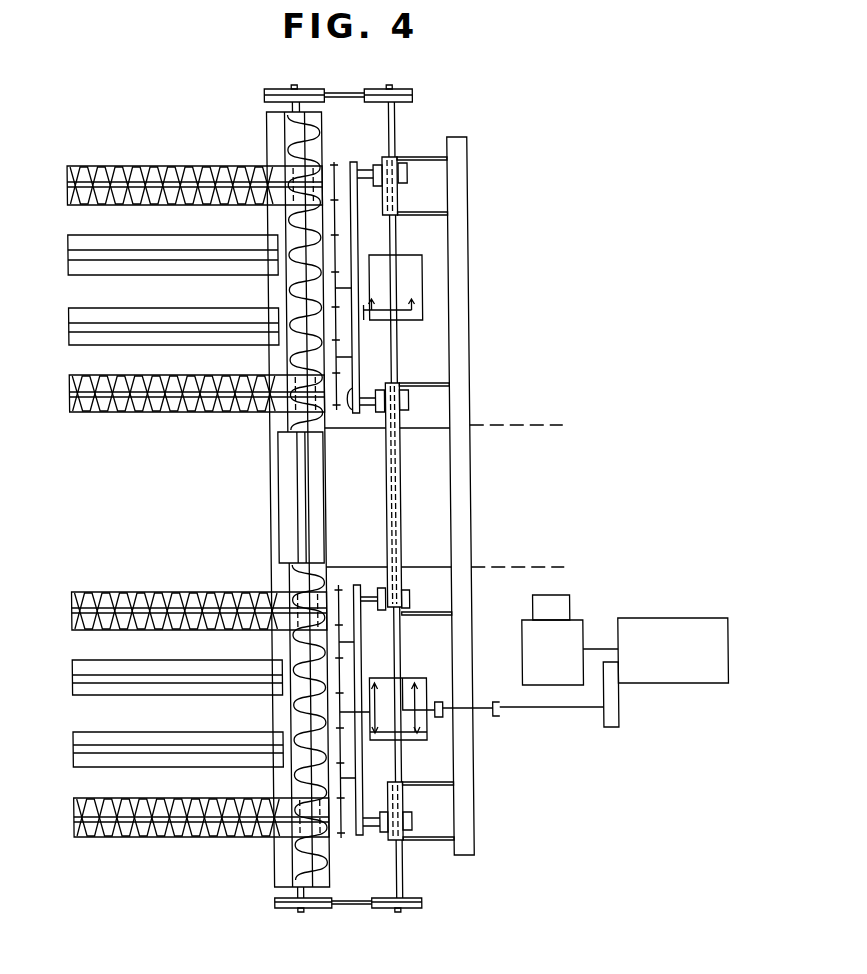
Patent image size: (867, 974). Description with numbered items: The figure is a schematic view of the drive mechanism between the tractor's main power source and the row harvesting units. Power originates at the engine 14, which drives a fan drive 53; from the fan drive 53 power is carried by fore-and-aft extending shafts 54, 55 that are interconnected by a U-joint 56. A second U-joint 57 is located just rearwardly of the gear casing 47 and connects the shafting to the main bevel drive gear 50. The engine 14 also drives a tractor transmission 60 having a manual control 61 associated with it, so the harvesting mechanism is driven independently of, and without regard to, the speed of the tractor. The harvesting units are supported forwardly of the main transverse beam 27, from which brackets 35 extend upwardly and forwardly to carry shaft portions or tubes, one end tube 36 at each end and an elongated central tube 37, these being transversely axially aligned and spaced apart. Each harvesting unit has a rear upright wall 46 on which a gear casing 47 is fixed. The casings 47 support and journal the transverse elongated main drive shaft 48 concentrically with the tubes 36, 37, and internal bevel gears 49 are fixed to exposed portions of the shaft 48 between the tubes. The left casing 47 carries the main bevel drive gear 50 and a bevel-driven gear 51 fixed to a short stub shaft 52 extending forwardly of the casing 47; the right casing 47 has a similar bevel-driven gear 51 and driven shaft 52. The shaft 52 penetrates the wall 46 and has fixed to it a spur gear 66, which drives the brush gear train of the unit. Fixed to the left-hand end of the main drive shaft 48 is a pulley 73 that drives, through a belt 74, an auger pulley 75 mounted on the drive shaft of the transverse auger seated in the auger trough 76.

The engine 14 is at (723, 650).
The main transverse beam 27 is at (467, 815).
The brackets 35 is at (428, 158).
The end shaft portion or tube 36 is at (398, 197).
The elongated central shaft portion or tube 37 is at (467, 507).
The rear upright wall 46 is at (349, 413).
The gear casing 47 is at (421, 322).
The main drive shaft 48 is at (395, 882).
The internal bevel gear 49 is at (403, 320).
The main bevel drive gear 50 is at (415, 718).
The bevel-driven gear 51 is at (363, 300).
The stub shaft 52 is at (348, 285).
The fan drive 53 is at (613, 712).
The fore-and-aft extending shaft 54 is at (572, 708).
The fore-and-aft extending shaft 55 is at (480, 705).
The U-joint 56 is at (491, 716).
The second U-joint 57 is at (433, 700).
The tractor transmission 60 is at (573, 630).
The manual control 61 is at (566, 605).
The spur gear 66 is at (275, 713).
The pulley 73 is at (377, 910).
The belt 74 is at (347, 905).
The auger pulley 75 is at (287, 910).
The auger trough 76 is at (318, 878).